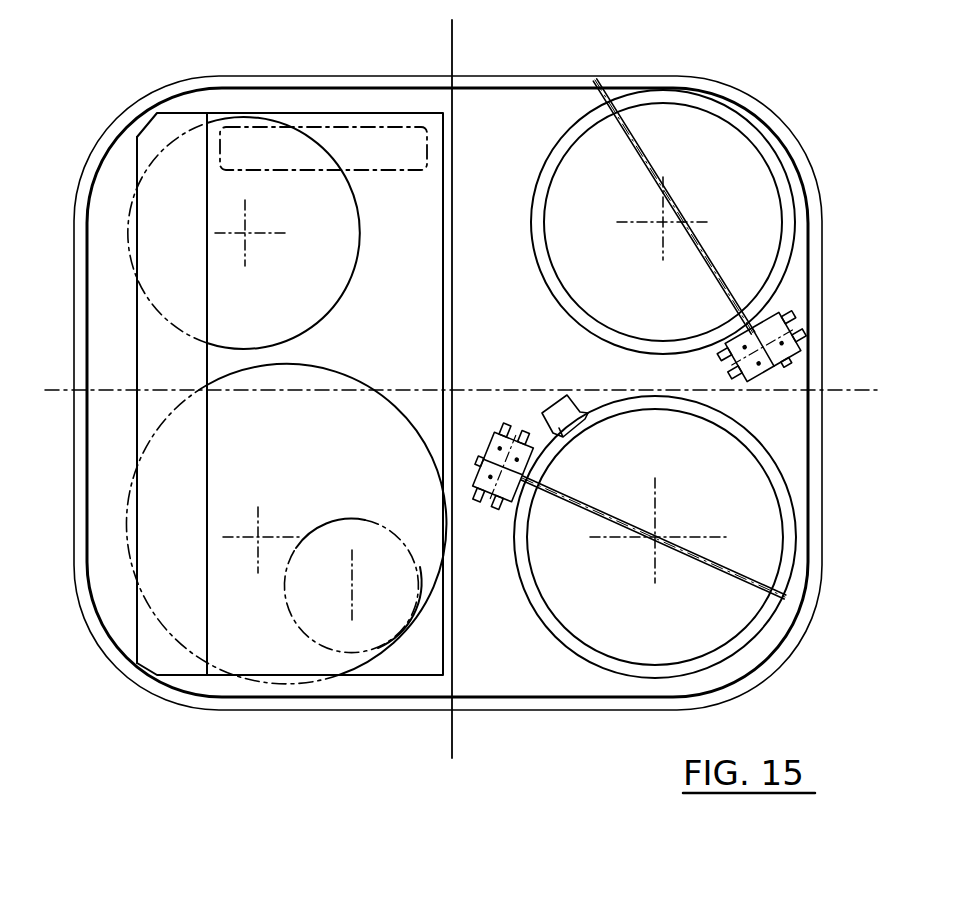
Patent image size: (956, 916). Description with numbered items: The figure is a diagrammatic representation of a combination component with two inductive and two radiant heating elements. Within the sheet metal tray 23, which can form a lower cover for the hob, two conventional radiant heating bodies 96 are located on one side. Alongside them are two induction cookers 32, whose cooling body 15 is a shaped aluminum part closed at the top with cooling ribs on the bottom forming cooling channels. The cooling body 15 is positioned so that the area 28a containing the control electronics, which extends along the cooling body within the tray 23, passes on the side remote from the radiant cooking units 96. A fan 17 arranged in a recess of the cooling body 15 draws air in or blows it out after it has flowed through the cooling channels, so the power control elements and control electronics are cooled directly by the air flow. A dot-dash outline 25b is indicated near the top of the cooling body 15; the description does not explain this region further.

The cooling body 15 is at (397, 670).
The fan 17 is at (345, 645).
The sheet metal tray 23 is at (422, 703).
The slot opening 25b is at (358, 125).
The area 28a is at (148, 373).
The induction cookers 32 is at (350, 208).
The radiant heating bodies 96 is at (760, 182).